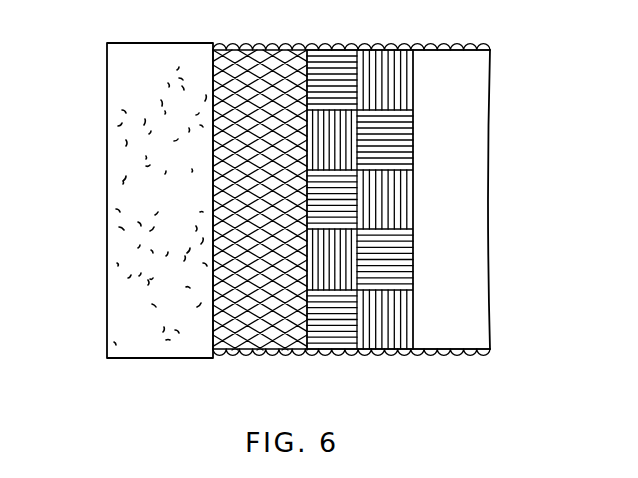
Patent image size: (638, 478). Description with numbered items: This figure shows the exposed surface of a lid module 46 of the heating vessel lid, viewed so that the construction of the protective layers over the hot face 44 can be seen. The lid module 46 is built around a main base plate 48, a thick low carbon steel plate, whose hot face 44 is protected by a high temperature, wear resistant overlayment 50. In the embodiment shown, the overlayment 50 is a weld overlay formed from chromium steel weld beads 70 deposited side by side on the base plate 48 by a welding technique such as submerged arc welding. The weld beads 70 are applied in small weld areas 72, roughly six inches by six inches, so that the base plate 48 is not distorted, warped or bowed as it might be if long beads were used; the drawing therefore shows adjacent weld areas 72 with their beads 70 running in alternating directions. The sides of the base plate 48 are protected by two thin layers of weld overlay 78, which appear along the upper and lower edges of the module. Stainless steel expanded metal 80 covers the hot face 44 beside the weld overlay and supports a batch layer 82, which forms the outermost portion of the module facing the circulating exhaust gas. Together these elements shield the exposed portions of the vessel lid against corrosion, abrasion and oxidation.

The hot face 44 is at (473, 82).
The lid module 46 is at (514, 146).
The main base plate 48 is at (489, 302).
The overlayment 50 is at (323, 77).
The weld beads 70 is at (402, 72).
The weld area 72 is at (332, 338).
The weld overlay 78 is at (237, 47).
The stainless steel expanded metal 80 is at (270, 340).
The batch layer 82 is at (112, 128).